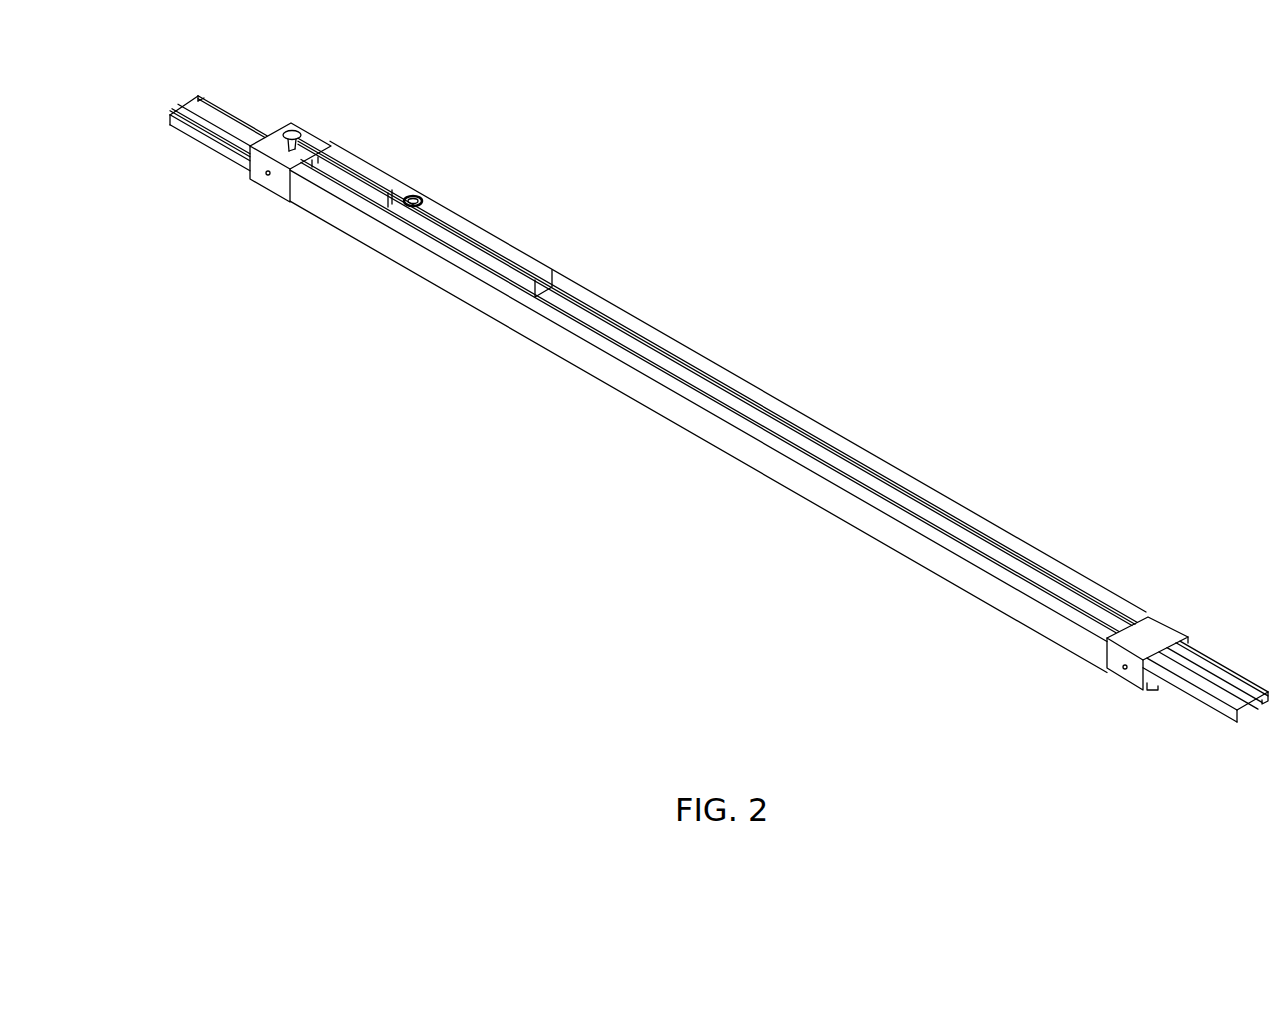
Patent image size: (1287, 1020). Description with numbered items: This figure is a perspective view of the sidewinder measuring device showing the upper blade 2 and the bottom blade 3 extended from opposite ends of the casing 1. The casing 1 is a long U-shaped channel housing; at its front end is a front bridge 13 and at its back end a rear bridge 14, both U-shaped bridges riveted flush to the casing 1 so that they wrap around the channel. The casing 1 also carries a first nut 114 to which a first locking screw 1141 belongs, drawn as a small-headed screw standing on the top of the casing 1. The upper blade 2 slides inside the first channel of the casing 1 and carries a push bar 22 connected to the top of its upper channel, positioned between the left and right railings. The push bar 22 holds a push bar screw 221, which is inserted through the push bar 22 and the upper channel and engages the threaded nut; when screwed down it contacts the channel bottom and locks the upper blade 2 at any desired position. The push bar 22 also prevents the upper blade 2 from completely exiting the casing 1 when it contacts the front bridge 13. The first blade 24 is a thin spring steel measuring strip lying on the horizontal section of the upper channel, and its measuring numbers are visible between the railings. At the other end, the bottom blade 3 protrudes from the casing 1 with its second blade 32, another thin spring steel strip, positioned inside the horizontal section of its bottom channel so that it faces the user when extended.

The casing 1 is at (626, 383).
The upper blade 2 is at (783, 451).
The bottom blade 3 is at (196, 98).
The front bridge 13 is at (1160, 632).
The rear bridge 14 is at (277, 185).
The push bar 22 is at (501, 233).
The first blade 24 is at (1248, 698).
The second blade 32 is at (190, 108).
The first nut 114 is at (353, 146).
The push bar screw 221 is at (417, 196).
The first locking screw 1141 is at (290, 132).